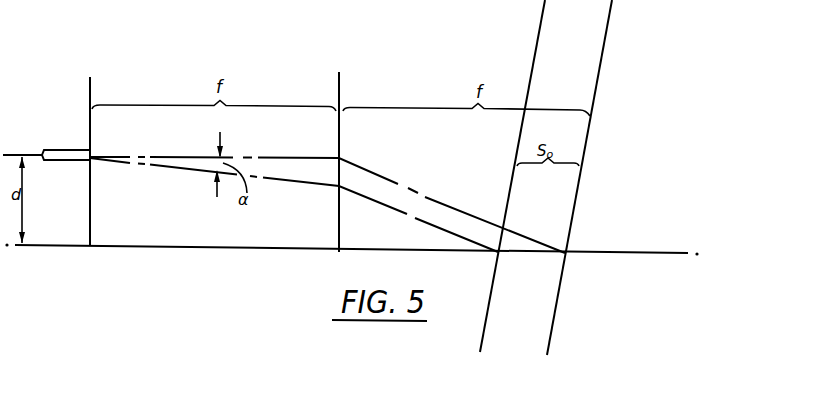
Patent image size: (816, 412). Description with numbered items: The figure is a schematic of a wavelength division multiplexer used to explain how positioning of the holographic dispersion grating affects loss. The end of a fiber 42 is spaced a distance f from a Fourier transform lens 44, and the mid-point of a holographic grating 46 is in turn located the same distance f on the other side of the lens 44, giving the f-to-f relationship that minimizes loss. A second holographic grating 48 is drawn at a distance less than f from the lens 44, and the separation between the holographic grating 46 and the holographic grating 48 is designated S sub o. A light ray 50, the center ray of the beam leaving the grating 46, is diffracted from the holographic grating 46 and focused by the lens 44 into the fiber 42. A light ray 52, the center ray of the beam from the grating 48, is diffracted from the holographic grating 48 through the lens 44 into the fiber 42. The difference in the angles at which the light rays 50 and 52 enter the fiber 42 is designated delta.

The fiber 42 is at (65, 150).
The Fourier transform lens 44 is at (339, 75).
The holographic grating 46 is at (601, 58).
The holographic grating 48 is at (537, 42).
The light ray 50 is at (401, 183).
The light ray 52 is at (405, 213).